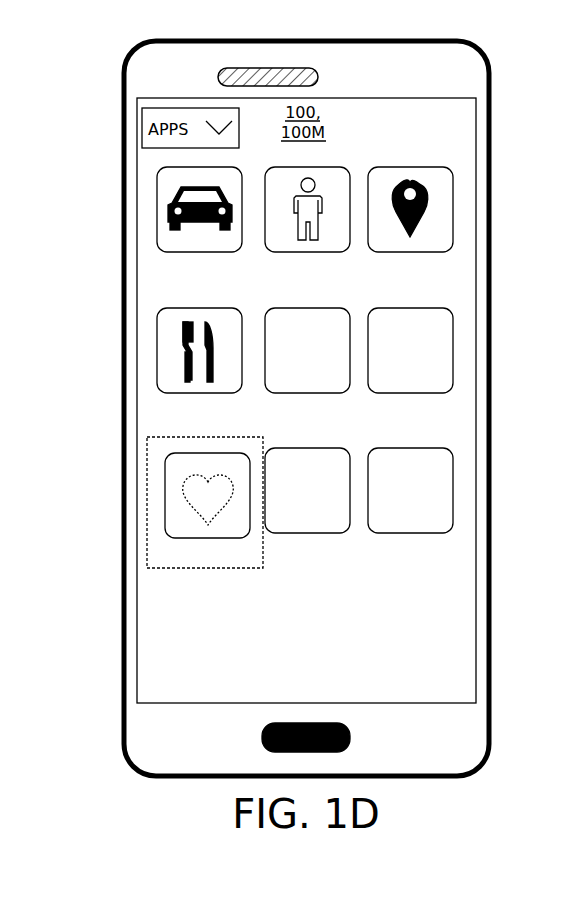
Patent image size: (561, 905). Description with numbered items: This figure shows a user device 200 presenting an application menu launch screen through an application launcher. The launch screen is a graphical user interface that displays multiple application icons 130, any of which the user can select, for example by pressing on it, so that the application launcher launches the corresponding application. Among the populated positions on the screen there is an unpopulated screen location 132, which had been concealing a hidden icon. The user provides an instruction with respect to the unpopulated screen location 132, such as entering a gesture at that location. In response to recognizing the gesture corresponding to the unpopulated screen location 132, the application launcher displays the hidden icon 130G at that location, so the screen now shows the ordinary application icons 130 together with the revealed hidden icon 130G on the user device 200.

The user device 200 is at (492, 70).
The application icons 130 is at (157, 170).
The unpopulated screen location 132 is at (147, 478).
The hidden icon 130G is at (161, 520).